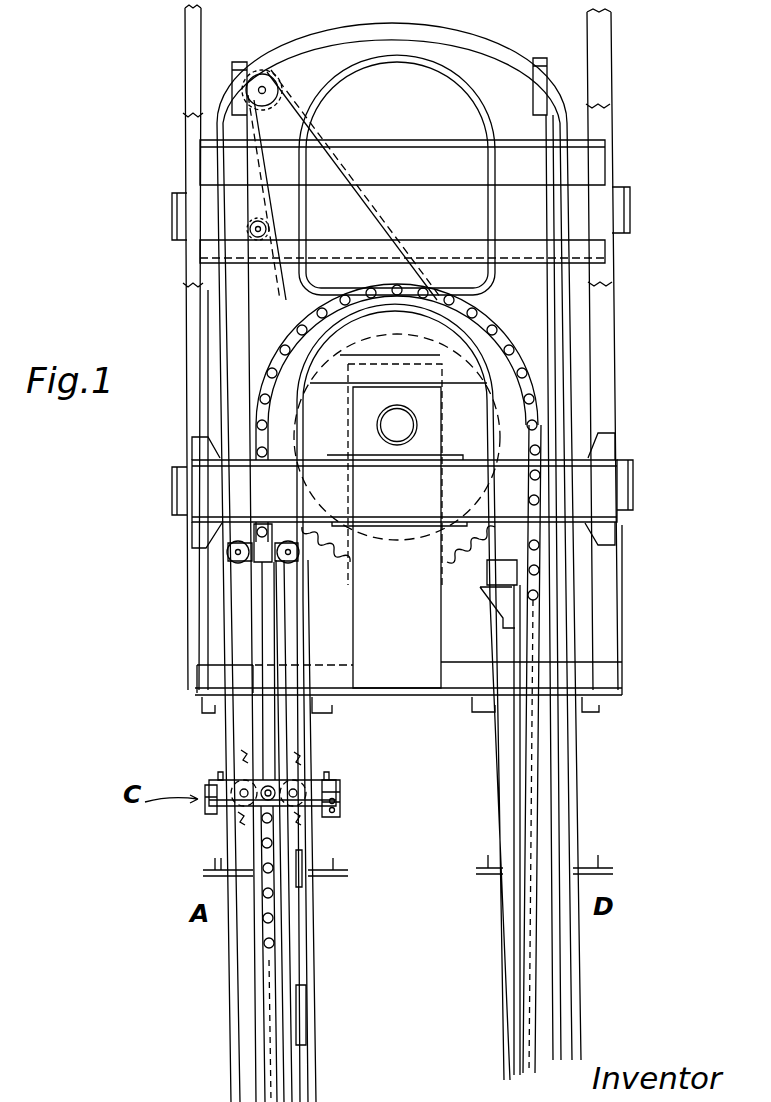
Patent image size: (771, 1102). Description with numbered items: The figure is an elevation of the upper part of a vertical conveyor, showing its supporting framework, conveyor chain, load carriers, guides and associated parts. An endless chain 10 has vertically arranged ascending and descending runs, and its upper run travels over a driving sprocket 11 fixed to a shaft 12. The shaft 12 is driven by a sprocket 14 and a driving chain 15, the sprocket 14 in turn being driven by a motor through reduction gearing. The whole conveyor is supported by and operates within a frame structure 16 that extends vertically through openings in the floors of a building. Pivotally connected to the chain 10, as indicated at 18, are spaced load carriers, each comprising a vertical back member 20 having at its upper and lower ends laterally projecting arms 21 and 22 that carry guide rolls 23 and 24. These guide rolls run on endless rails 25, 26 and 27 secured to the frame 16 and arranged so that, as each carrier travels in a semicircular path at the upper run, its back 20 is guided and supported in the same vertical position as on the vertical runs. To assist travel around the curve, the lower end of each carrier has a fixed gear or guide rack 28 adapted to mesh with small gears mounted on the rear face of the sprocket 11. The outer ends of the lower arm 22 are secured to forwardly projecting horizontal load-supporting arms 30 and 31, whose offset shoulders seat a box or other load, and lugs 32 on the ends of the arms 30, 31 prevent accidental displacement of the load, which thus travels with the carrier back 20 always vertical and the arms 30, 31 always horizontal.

The endless chain 10 is at (535, 407).
The driving sprocket 11 is at (497, 367).
The shaft 12 is at (405, 425).
The sprocket 14 is at (272, 72).
The driving chain 15 is at (380, 238).
The frame structure 16 is at (602, 305).
The pivotal connection 18 is at (272, 786).
The vertical back member 20 is at (266, 714).
The upper arm 21 is at (230, 550).
The lower arm 22 is at (230, 807).
The guide roll 23 is at (289, 568).
The guide roll 24 is at (233, 558).
The endless rail 25 is at (312, 947).
The endless rail 26 is at (488, 50).
The endless rail 27 is at (460, 98).
The guide rack 28 is at (298, 817).
The load-supporting arm 30 is at (331, 776).
The load-supporting arm 31 is at (220, 784).
The lug 32 is at (212, 792).